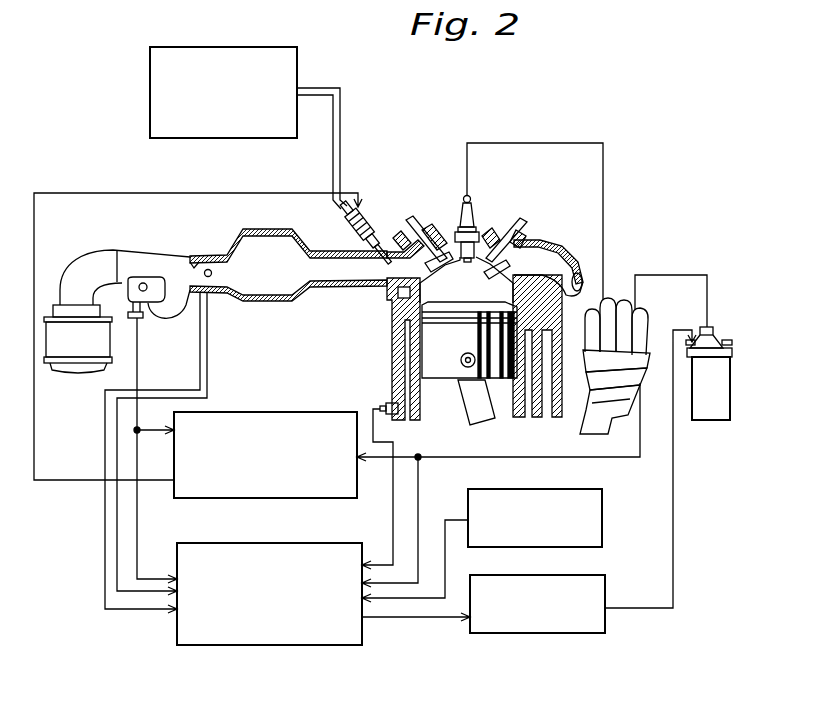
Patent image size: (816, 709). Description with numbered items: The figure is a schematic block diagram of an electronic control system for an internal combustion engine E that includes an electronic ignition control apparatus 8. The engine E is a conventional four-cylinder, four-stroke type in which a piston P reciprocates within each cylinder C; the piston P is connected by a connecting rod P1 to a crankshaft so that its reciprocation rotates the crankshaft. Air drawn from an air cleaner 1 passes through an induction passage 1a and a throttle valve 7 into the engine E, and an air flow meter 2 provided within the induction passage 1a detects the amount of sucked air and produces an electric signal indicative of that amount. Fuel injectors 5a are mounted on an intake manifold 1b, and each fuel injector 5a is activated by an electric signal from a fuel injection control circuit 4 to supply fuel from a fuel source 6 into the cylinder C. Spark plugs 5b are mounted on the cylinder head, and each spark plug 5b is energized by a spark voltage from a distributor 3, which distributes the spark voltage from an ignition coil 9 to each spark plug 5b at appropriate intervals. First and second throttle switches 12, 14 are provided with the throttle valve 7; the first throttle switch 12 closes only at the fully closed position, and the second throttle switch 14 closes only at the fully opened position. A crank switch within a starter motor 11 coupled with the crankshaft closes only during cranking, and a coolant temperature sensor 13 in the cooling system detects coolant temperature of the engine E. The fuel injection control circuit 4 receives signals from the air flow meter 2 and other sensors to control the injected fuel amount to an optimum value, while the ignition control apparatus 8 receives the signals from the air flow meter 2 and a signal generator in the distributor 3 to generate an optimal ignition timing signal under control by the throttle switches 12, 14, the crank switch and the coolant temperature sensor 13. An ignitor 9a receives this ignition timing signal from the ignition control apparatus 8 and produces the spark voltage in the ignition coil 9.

The air cleaner 1 is at (78, 372).
The induction passage 1a is at (192, 256).
The intake manifold 1b is at (352, 287).
The air flow meter 2 is at (162, 313).
The distributor 3 is at (643, 320).
The fuel injection control circuit 4 is at (247, 412).
The fuel injector 5a is at (368, 222).
The spark plug 5b is at (473, 212).
The fuel source 6 is at (245, 47).
The throttle valve 7 is at (212, 273).
The electronic ignition control apparatus 8 is at (244, 543).
The ignition coil 9 is at (717, 390).
The ignitor 9a is at (605, 585).
The starter motor 11 is at (604, 528).
The first throttle switch 12 is at (209, 294).
The coolant temperature sensor 13 is at (387, 403).
The second throttle switch 14 is at (199, 294).
The cylinder C is at (390, 311).
The internal combustion engine E is at (552, 236).
The piston P is at (452, 352).
The connecting rod P1 is at (470, 403).